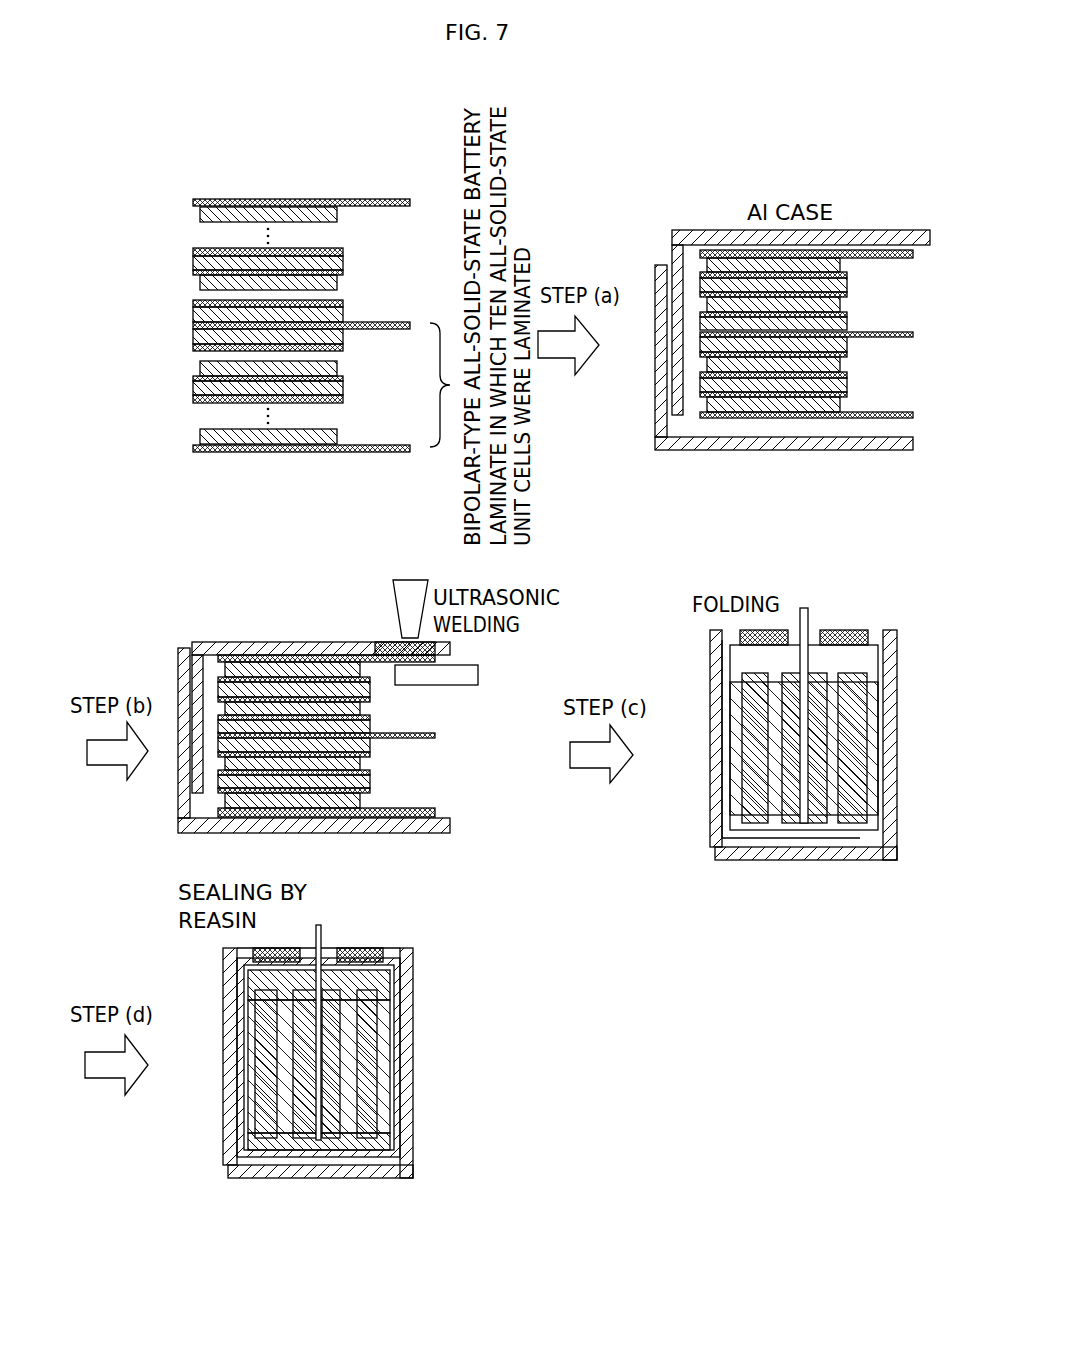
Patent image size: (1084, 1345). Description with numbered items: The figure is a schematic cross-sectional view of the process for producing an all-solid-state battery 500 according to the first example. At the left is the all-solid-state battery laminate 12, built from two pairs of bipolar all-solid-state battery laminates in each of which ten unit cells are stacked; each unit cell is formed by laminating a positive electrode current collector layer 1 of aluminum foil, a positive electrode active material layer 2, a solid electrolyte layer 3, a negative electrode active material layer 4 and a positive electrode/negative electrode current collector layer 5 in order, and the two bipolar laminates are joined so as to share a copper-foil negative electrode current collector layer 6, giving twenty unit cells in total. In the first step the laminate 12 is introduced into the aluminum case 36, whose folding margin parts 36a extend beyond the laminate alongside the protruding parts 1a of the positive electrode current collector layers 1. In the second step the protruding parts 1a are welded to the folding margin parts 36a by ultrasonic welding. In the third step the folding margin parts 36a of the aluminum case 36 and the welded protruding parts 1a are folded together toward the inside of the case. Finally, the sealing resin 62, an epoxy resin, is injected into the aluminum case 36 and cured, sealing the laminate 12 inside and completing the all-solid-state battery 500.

The positive electrode current collector layer 1 is at (193, 202).
The positive electrode active material layer 2 is at (196, 209).
The solid electrolyte layer 3 is at (198, 215).
The negative electrode active material layer 4 is at (200, 221).
The positive electrode/negative electrode current collector layer 5 is at (193, 252).
The negative electrode current collector layer 6 is at (193, 325).
The all-solid-state battery laminate 12 is at (122, 112).
The aluminum case 36 is at (703, 229).
The folding margin parts 36a is at (850, 228).
The protruding parts 1a is at (850, 262).
The all-solid-state battery 500 is at (361, 1038).
The sealing resin 62 is at (413, 976).